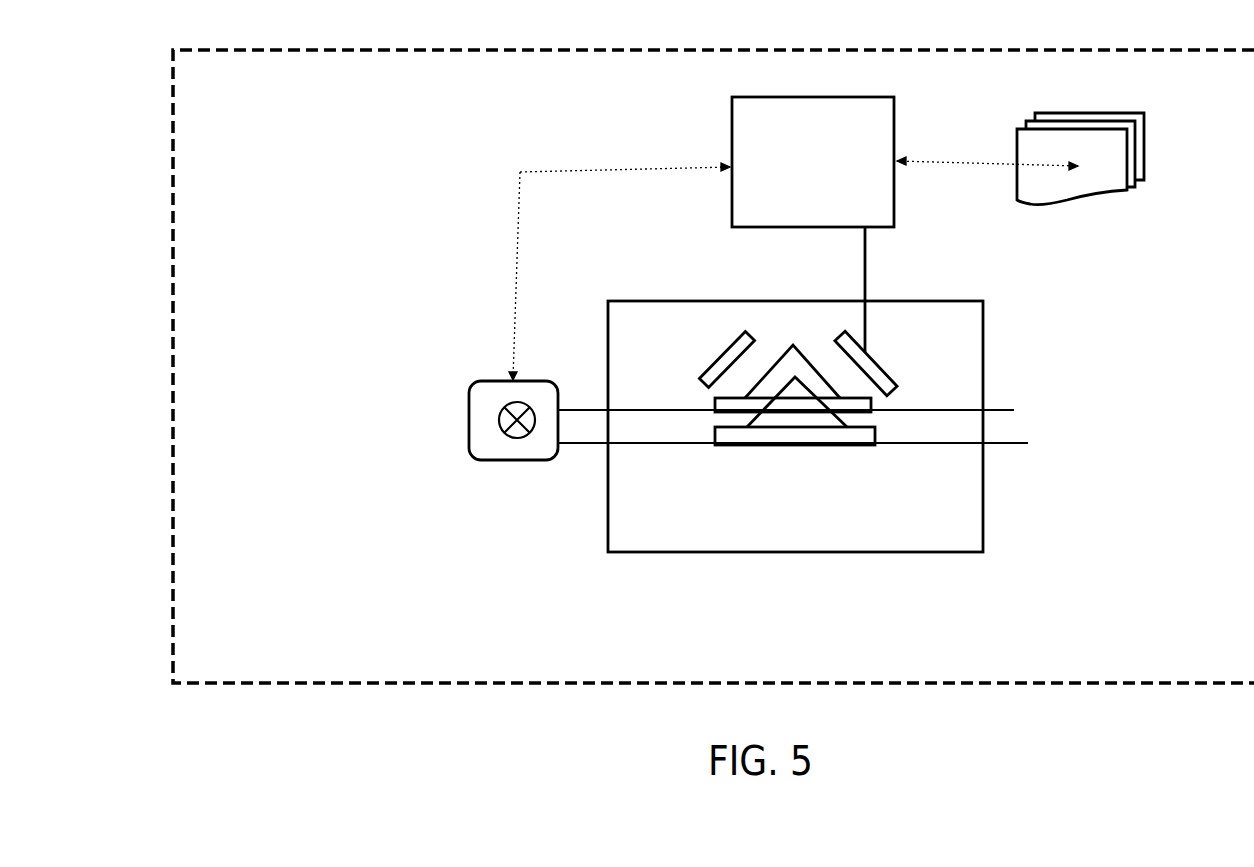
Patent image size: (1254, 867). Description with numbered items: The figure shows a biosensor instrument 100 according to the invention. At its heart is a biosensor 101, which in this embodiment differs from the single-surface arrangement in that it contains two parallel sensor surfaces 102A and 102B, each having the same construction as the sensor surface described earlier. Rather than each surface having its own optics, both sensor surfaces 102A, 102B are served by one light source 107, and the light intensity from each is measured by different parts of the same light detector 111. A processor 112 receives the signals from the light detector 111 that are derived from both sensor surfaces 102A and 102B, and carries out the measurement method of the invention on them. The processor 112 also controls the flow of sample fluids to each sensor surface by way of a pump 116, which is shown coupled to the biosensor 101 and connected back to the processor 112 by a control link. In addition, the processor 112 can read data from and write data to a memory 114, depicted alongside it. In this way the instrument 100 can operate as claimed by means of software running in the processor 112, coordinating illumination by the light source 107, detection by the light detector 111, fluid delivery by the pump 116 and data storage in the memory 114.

The biosensor instrument 100 is at (168, 116).
The biosensor 101 is at (792, 552).
The sensor surface 102A is at (875, 405).
The sensor surface 102B is at (878, 432).
The light source 107 is at (728, 343).
The light detector 111 is at (878, 357).
The processor 112 is at (793, 238).
The memory 114 is at (1115, 150).
The pump 116 is at (516, 463).